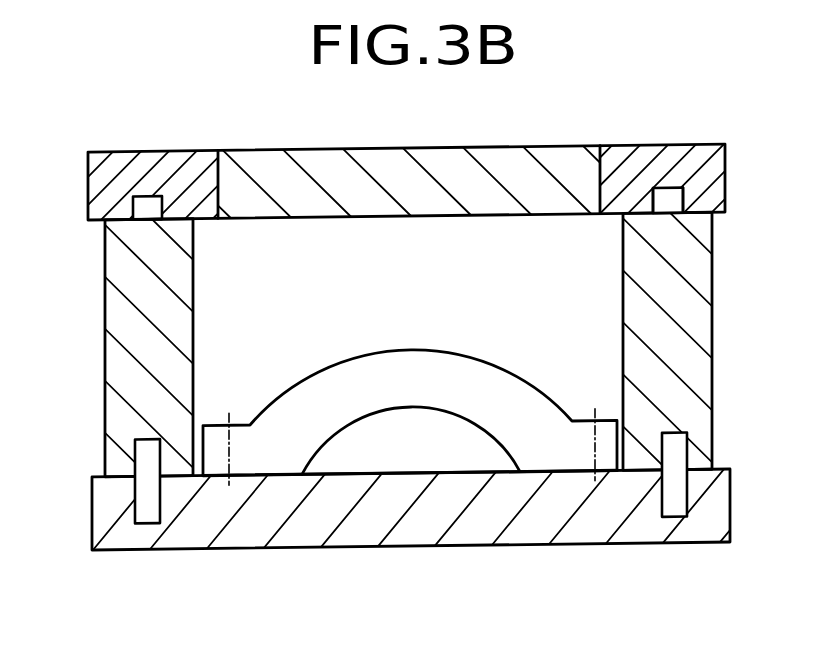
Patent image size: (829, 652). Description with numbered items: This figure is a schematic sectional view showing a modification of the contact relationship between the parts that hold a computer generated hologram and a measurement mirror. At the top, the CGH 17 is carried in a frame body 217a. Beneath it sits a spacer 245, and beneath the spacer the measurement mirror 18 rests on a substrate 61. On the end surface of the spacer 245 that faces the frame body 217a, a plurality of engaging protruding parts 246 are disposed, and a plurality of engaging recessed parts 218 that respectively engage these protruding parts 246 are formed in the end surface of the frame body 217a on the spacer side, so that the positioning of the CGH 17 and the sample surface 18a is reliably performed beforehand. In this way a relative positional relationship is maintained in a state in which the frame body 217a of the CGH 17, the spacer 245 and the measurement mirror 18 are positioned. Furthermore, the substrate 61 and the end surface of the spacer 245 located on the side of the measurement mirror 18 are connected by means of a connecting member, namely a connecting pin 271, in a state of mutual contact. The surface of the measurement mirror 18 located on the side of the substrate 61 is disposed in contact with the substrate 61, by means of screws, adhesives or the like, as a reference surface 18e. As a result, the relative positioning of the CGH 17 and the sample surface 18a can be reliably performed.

The CGH 17 is at (380, 158).
The frame body 217a is at (652, 156).
The engaging recessed parts 218 is at (678, 192).
The engaging protruding parts 246 is at (668, 200).
The spacer 245 is at (118, 302).
The connecting member (connecting pin) 271 is at (137, 445).
The measurement mirror 18 is at (318, 378).
The sample surface 18a is at (413, 348).
The reference surface 18e is at (265, 476).
The substrate 61 is at (530, 532).